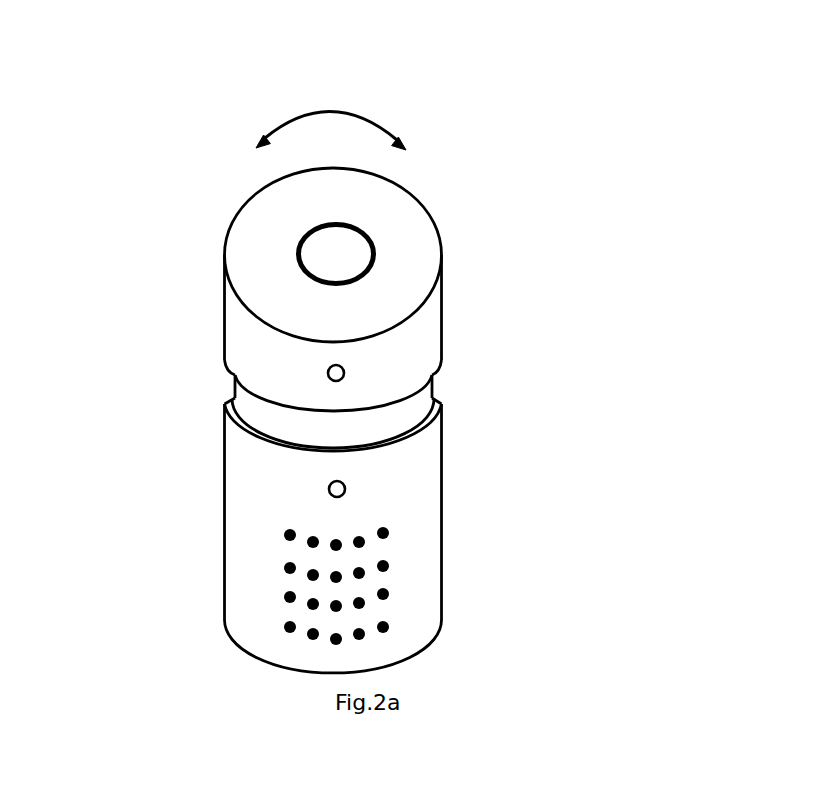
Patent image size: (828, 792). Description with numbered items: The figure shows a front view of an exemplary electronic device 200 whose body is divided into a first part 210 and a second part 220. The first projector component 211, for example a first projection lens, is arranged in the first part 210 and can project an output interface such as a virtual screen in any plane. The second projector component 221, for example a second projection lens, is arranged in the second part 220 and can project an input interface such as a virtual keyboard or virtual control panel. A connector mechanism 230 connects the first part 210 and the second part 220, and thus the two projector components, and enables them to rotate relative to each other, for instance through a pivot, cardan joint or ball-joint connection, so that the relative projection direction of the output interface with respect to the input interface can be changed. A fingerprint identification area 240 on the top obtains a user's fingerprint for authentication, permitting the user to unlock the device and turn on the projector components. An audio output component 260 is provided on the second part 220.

The electronic device 200 is at (403, 65).
The first part 210 is at (283, 370).
The fingerprint identification area 240 is at (328, 258).
The first projector component 211 is at (343, 371).
The connector mechanism 230 is at (397, 413).
The second part 220 is at (282, 552).
The second projector component 221 is at (345, 486).
The audio output component 260 is at (342, 583).